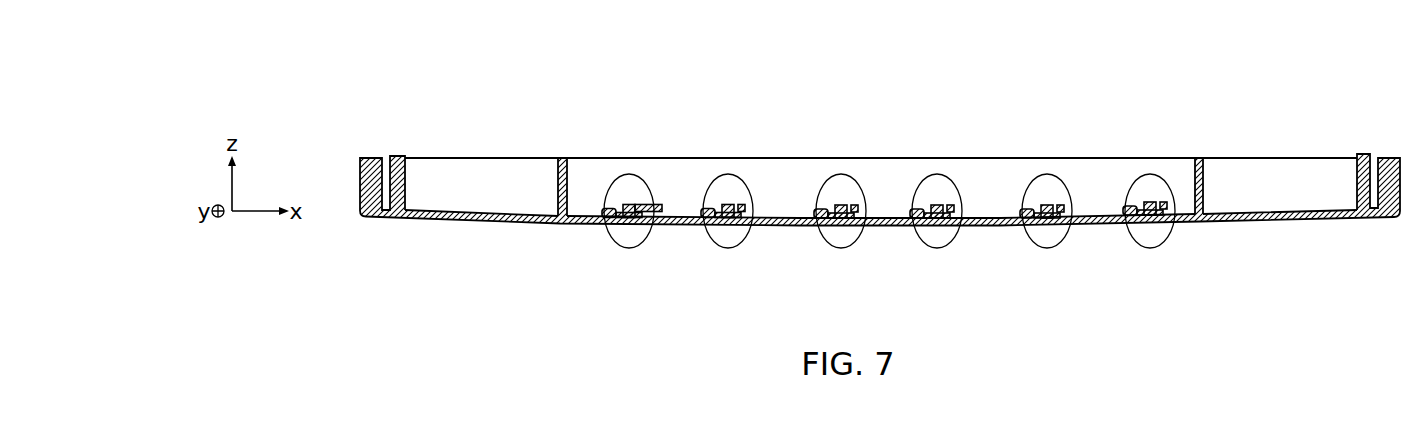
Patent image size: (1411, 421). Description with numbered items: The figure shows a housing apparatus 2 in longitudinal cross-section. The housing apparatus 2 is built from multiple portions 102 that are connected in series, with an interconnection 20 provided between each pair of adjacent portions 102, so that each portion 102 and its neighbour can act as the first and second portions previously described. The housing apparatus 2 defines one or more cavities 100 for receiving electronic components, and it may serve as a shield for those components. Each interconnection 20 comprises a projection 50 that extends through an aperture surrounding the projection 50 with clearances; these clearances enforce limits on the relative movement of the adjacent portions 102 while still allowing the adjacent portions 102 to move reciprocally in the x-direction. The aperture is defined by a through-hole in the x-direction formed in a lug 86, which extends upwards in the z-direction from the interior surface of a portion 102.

The housing apparatus 2 is at (1145, 94).
The interconnection 20 is at (630, 247).
The projection 50 is at (660, 205).
The lug 86 is at (628, 205).
The cavity 100 is at (458, 180).
The portion 102 is at (592, 226).